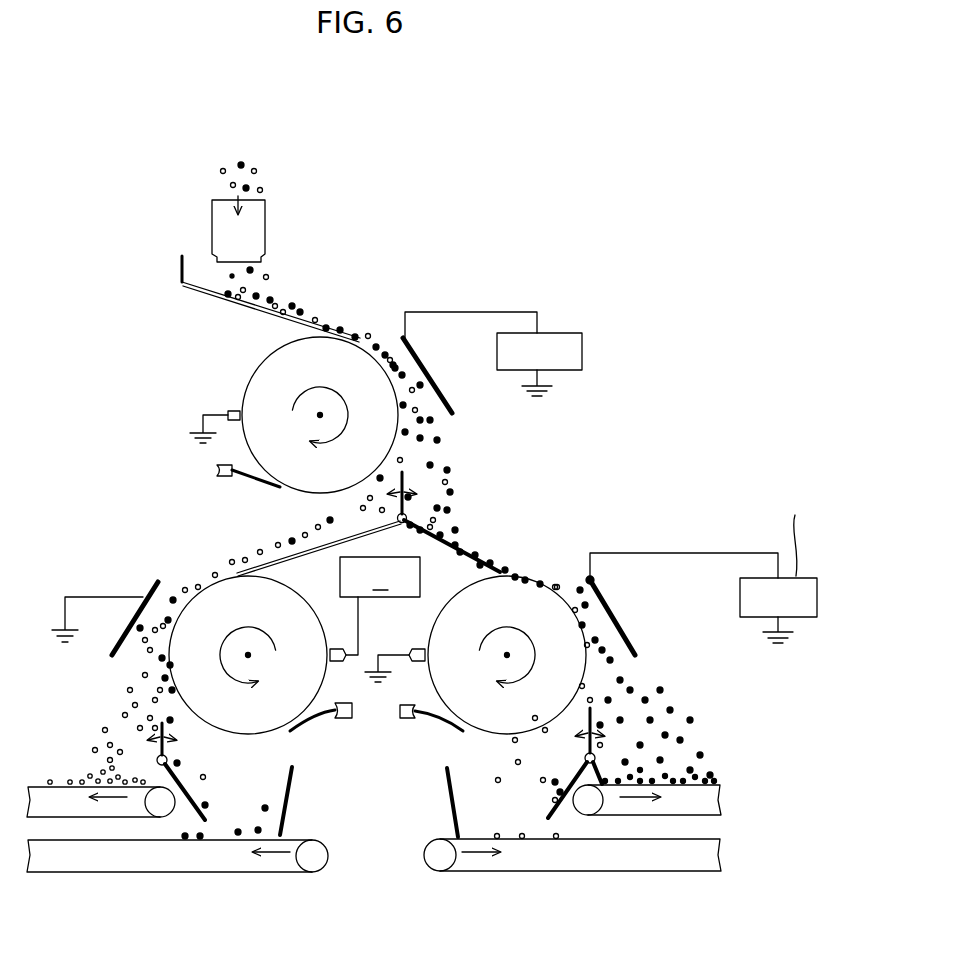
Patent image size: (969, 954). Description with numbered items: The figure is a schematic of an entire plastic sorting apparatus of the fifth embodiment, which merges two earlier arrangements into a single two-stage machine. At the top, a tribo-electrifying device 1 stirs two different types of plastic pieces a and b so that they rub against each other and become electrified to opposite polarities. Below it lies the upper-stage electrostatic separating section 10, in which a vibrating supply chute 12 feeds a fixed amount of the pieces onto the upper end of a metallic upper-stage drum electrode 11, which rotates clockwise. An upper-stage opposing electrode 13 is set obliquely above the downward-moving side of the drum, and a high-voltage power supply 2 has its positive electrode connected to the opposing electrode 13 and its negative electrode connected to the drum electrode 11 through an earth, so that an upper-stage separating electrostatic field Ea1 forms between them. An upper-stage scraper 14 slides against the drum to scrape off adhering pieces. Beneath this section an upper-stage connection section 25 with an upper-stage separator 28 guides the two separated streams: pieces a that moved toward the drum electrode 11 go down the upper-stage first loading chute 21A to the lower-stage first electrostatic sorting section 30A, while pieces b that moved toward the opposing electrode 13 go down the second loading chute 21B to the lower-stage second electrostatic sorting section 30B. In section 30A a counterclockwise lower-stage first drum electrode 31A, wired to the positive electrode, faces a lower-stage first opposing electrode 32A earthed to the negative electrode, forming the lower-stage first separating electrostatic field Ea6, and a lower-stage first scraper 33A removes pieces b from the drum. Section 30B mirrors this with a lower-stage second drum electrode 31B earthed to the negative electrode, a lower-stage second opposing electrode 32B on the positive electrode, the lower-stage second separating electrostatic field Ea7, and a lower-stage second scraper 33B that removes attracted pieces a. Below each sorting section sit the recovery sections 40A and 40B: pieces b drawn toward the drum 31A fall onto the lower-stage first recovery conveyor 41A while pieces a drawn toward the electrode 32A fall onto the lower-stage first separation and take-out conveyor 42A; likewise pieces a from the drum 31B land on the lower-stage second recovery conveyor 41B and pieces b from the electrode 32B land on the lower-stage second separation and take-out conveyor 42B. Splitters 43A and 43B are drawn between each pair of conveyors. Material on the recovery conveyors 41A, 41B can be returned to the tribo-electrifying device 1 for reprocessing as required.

The upper-stage electrostatic separating section 10 is at (142, 366).
The plastic pieces a is at (223, 168).
The plastic pieces b is at (244, 163).
The tribo-electrifying device 1 is at (265, 224).
The supply chute 12 is at (232, 302).
The upper-stage drum electrode 11 is at (250, 373).
The upper-stage opposing electrode 13 is at (418, 368).
The upper-stage separating electrostatic field Ea1 is at (395, 350).
The high-voltage power supply 2 is at (567, 333).
The upper-stage scraper 14 is at (258, 477).
The upper-stage separator 28 is at (408, 474).
The upper-stage connection section 25 is at (502, 504).
The upper-stage first loading chute 21A is at (302, 546).
The second loading chute 21B is at (490, 554).
The lower-stage first electrostatic sorting section 30A is at (203, 559).
The lower-stage second electrostatic sorting section 30B is at (556, 557).
The lower-stage first drum electrode 31A is at (254, 622).
The lower-stage second drum electrode 31B is at (514, 622).
The lower-stage first opposing electrode 32A is at (152, 584).
The lower-stage second opposing electrode 32B is at (622, 632).
The lower-stage first separating electrostatic field Ea6 is at (154, 650).
The lower-stage second separating electrostatic field Ea7 is at (598, 652).
The lower-stage first scraper 33A is at (318, 722).
The lower-stage second scraper 33B is at (448, 722).
The splitter A 43A is at (172, 747).
The splitter B 43B is at (600, 711).
The lower-stage first separation and take-out conveyor 42A is at (44, 786).
The lower-stage second separation and take-out conveyor 42B is at (722, 777).
The first recovery section 40A is at (232, 880).
The second recovery section 40B is at (517, 880).
The lower-stage first recovery conveyor 41A is at (142, 872).
The lower-stage second recovery conveyor 41B is at (598, 872).